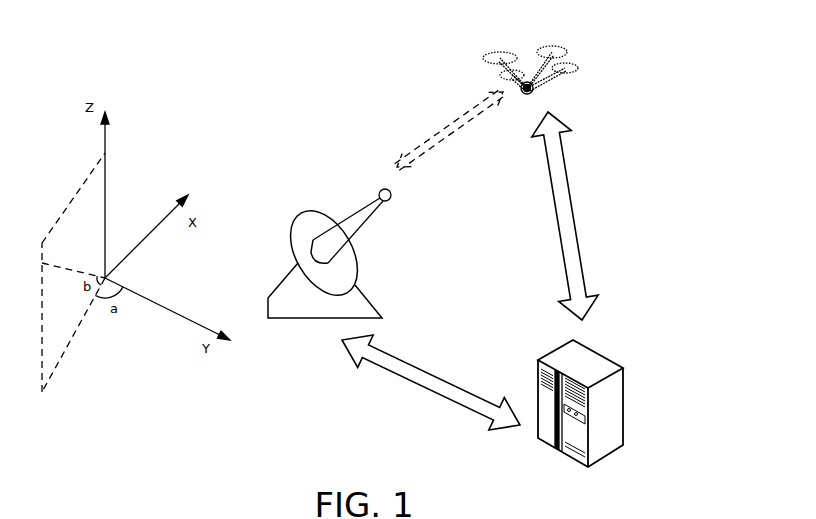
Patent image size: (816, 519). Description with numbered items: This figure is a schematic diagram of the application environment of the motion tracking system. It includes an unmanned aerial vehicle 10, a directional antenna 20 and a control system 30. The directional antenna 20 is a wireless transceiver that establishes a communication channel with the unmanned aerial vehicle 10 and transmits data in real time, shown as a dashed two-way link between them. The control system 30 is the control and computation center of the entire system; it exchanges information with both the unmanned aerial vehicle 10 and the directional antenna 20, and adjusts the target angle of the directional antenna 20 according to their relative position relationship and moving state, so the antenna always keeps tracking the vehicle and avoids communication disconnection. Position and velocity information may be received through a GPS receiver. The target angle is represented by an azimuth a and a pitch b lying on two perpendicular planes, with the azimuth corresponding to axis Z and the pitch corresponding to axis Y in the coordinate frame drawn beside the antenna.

The unmanned aerial vehicle 10 is at (517, 48).
The directional antenna 20 is at (292, 318).
The control system 30 is at (610, 357).